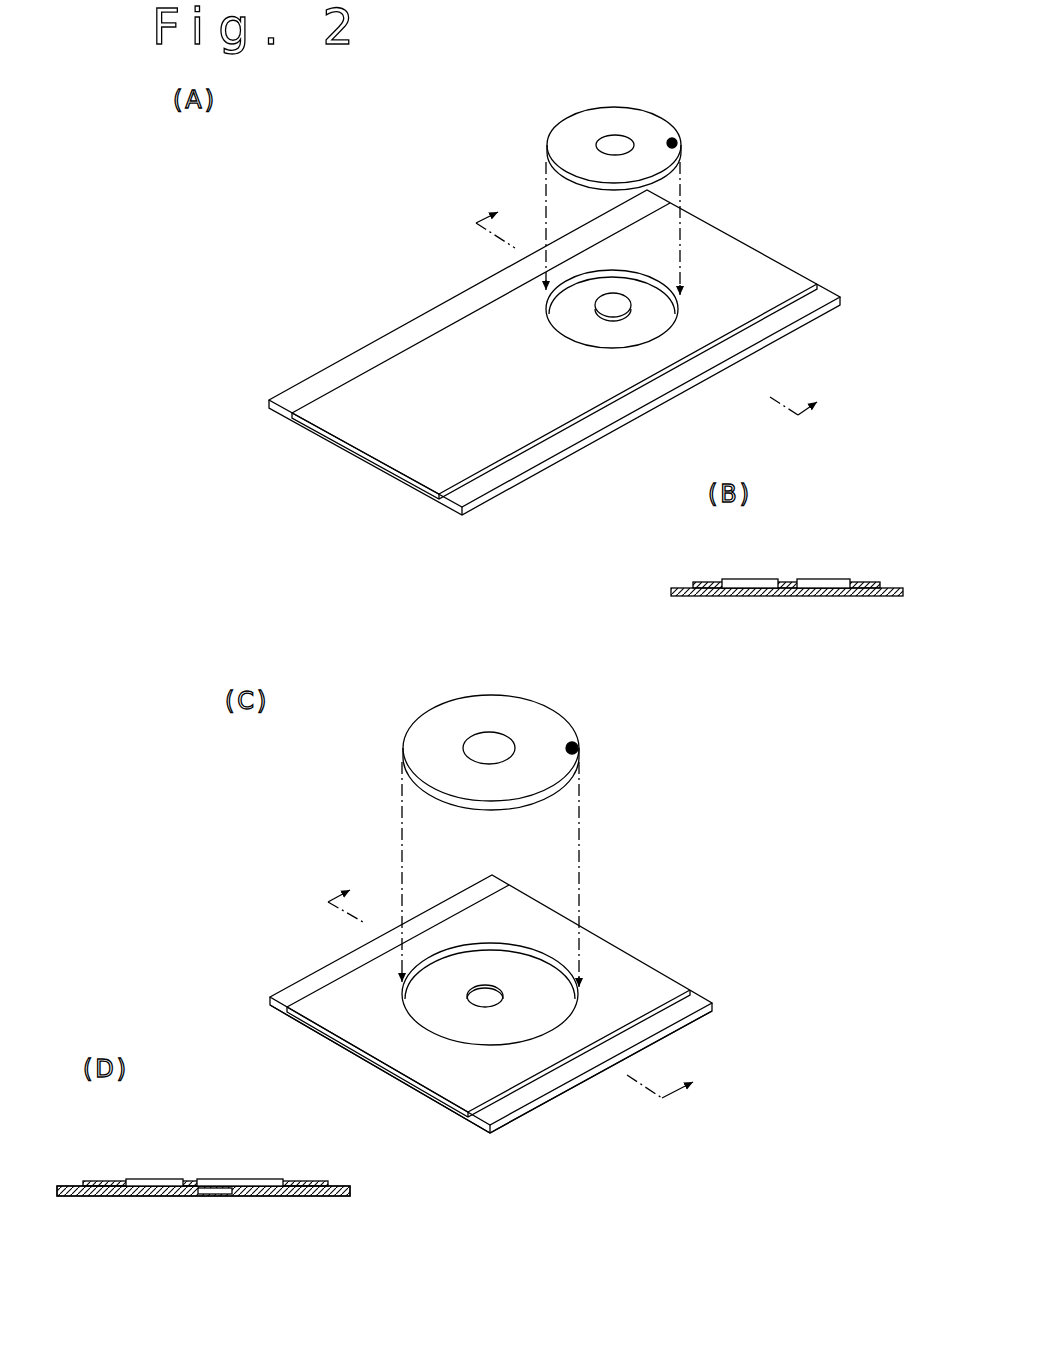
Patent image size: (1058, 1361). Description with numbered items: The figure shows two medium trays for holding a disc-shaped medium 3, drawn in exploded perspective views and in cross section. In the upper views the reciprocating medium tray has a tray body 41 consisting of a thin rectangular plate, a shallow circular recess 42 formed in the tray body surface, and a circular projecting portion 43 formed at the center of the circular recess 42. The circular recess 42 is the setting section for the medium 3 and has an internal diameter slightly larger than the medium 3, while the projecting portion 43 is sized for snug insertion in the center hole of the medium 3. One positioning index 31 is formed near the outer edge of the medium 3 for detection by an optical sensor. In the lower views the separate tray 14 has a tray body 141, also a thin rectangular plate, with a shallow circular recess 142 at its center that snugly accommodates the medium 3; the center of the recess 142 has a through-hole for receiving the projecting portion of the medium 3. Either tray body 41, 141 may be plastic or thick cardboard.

The medium 3 is at (674, 113).
The positioning index 31 is at (676, 143).
The tray body 41 is at (585, 443).
The circular recess 42 is at (665, 317).
The circular projecting portion 43 is at (625, 308).
The separate tray 14 is at (686, 964).
The tray body 141 is at (690, 998).
The circular recess 142 is at (545, 985).